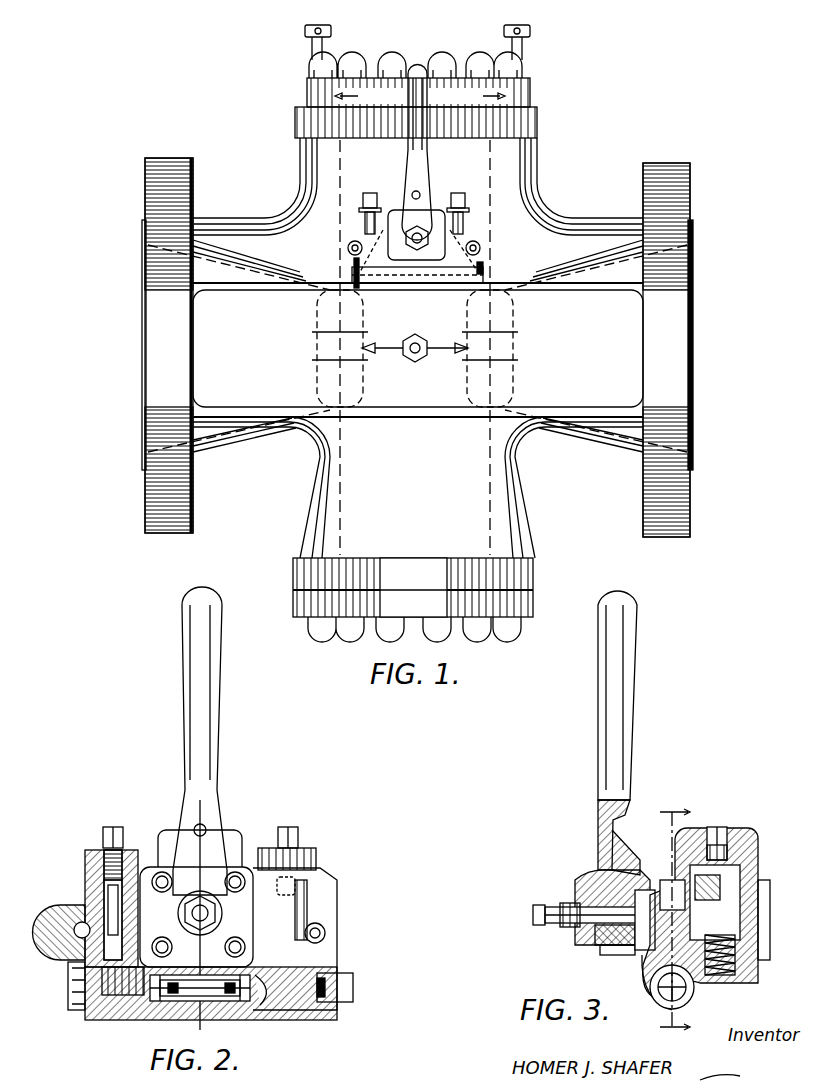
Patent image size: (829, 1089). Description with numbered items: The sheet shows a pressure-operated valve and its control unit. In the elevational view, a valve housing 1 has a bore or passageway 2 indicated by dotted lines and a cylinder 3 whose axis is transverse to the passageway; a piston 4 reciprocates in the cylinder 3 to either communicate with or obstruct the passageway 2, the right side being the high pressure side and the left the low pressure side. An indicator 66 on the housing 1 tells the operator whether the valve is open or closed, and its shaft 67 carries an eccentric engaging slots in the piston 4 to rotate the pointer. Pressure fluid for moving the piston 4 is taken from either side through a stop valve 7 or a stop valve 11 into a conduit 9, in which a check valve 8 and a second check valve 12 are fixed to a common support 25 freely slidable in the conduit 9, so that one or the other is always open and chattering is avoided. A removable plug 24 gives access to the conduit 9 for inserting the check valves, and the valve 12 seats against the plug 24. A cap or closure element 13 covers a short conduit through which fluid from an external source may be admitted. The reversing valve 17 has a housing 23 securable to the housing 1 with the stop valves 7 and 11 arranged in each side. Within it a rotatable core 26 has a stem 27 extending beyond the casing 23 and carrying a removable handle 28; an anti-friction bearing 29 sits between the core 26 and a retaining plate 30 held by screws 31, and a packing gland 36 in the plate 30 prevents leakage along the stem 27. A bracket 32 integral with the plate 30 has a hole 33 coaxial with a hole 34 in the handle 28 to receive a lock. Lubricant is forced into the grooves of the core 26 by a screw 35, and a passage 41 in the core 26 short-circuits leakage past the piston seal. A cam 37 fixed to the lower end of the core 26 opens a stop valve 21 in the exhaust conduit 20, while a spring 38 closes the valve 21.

In FIG. 1, the housing 1 is at (678, 506).
In FIG. 1, the bore or passageway 2 is at (655, 258).
In FIG. 1, the cylinder 3 is at (488, 152).
In FIG. 2, the cylinder 3 is at (162, 808).
In FIG. 1, the piston or plunger 4 is at (527, 572).
In FIG. 3, the piston or plunger 4 is at (667, 920).
In FIG. 1, the stop valve 7 is at (464, 197).
In FIG. 2, the stop valve 7 is at (298, 832).
In FIG. 2, the check valve 8 is at (240, 1000).
In FIG. 2, the conduit 9 is at (130, 1005).
In FIG. 1, the stop valve 11 is at (366, 195).
In FIG. 2, the stop valve 11 is at (106, 830).
In FIG. 2, the second check valve 12 is at (165, 1010).
In FIG. 1, the cap or closure element 13 is at (492, 270).
In FIG. 2, the cap or closure element 13 is at (340, 982).
In FIG. 1, the valve 17 is at (477, 222).
In FIG. 2, the valve 17 is at (238, 843).
In FIG. 3, the valve 17 is at (740, 825).
In FIG. 3, the conduit 20 is at (715, 827).
In FIG. 3, the stop valve 21 is at (742, 868).
In FIG. 2, the housing 23 is at (300, 910).
In FIG. 3, the housing 23 is at (688, 858).
In FIG. 2, the removable plug 24 is at (68, 985).
In FIG. 2, the common support 25 is at (232, 972).
In FIG. 3, the common support 25 is at (693, 997).
In FIG. 3, the core 26 is at (640, 955).
In FIG. 3, the stem 27 is at (560, 925).
In FIG. 1, the handle 28 is at (418, 68).
In FIG. 2, the handle 28 is at (215, 690).
In FIG. 3, the handle 28 is at (636, 673).
In FIG. 3, the anti-friction bearing 29 is at (610, 945).
In FIG. 1, the retaining plate 30 is at (437, 220).
In FIG. 3, the retaining plate 30 is at (615, 955).
In FIG. 2, the screws 31 is at (162, 893).
In FIG. 3, the bracket 32 is at (623, 815).
In FIG. 3, the hole 33 is at (625, 845).
In FIG. 1, the hole 34 is at (412, 193).
In FIG. 2, the hole 34 is at (206, 828).
In FIG. 3, the hole 34 is at (600, 830).
In FIG. 1, the screw 35 is at (406, 244).
In FIG. 2, the screw 35 is at (207, 920).
In FIG. 3, the screw 35 is at (538, 905).
In FIG. 3, the packing gland 36 is at (583, 884).
In FIG. 3, the cam 37 is at (760, 893).
In FIG. 3, the spring 38 is at (755, 970).
In FIG. 3, the passage 41 is at (650, 965).
In FIG. 1, the indicator 66 is at (390, 355).
In FIG. 1, the shaft 67 is at (417, 361).